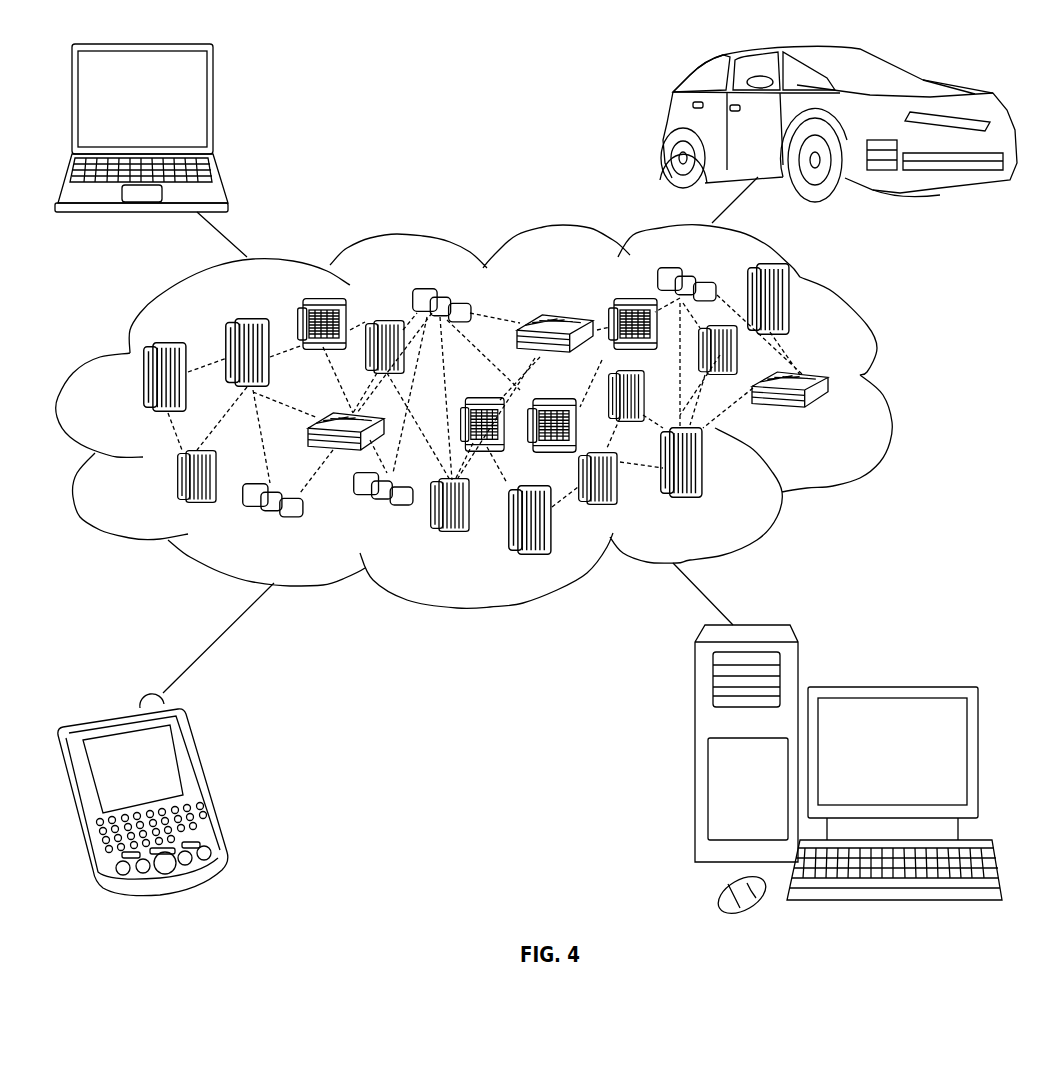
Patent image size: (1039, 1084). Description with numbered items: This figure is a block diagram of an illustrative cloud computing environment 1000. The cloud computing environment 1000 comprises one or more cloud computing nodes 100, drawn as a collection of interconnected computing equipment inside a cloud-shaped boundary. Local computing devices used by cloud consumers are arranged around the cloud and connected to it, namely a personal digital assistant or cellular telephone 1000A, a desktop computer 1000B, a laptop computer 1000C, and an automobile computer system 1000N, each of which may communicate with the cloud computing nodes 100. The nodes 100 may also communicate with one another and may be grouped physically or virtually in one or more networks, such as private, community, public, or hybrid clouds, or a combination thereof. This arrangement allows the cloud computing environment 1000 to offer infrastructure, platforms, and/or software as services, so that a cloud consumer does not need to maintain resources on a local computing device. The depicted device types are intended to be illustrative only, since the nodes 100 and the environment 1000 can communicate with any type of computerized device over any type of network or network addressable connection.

The laptop computer 1000C is at (217, 108).
The automobile computer system 1000N is at (661, 119).
The cloud computing environment 1000 is at (893, 387).
The cloud computing nodes 100 is at (830, 418).
The personal digital assistant (PDA) or cellular telephone 1000A is at (203, 783).
The desktop computer 1000B is at (900, 660).